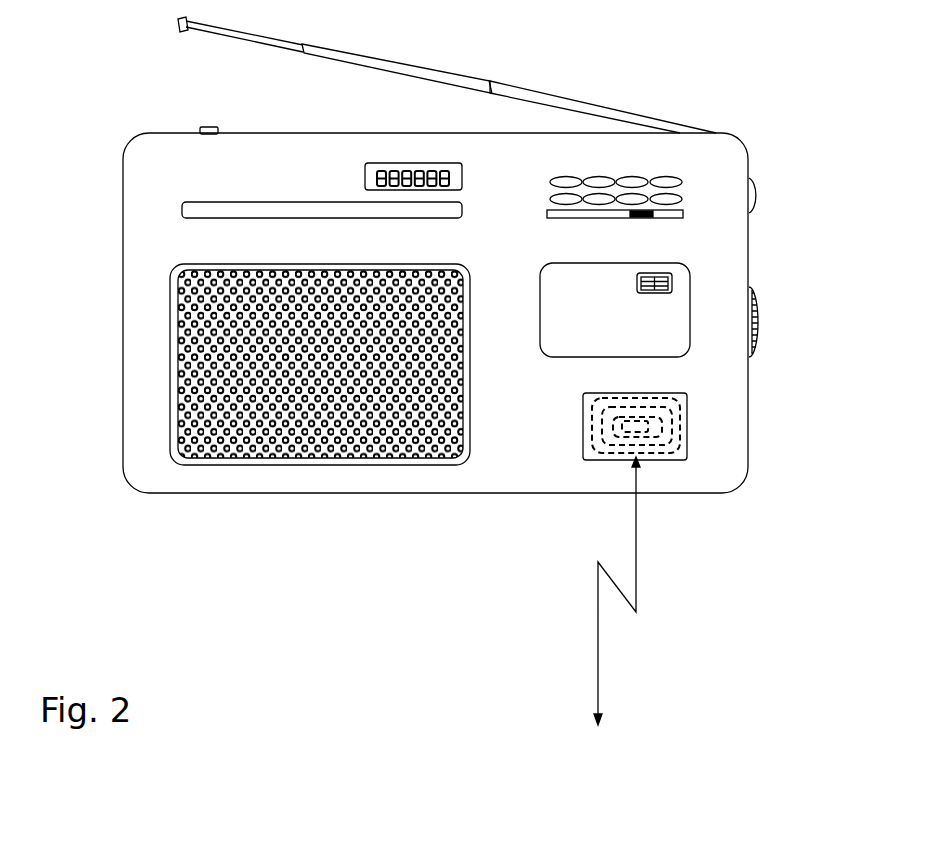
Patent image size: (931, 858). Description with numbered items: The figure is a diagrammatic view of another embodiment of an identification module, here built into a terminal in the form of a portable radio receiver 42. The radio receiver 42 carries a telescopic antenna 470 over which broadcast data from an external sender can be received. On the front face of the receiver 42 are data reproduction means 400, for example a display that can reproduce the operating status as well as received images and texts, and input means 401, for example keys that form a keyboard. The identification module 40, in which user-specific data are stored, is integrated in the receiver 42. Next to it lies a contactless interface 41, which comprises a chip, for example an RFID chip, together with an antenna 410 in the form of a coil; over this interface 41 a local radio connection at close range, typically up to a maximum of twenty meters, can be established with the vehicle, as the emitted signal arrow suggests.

The portable radio receiver 42 is at (118, 500).
The antenna 470 is at (547, 100).
The data reproduction means 400 is at (393, 163).
The input means 401 is at (767, 318).
The identification module 40 is at (615, 310).
The antenna 410 is at (680, 457).
The contactless interface 41 is at (625, 427).